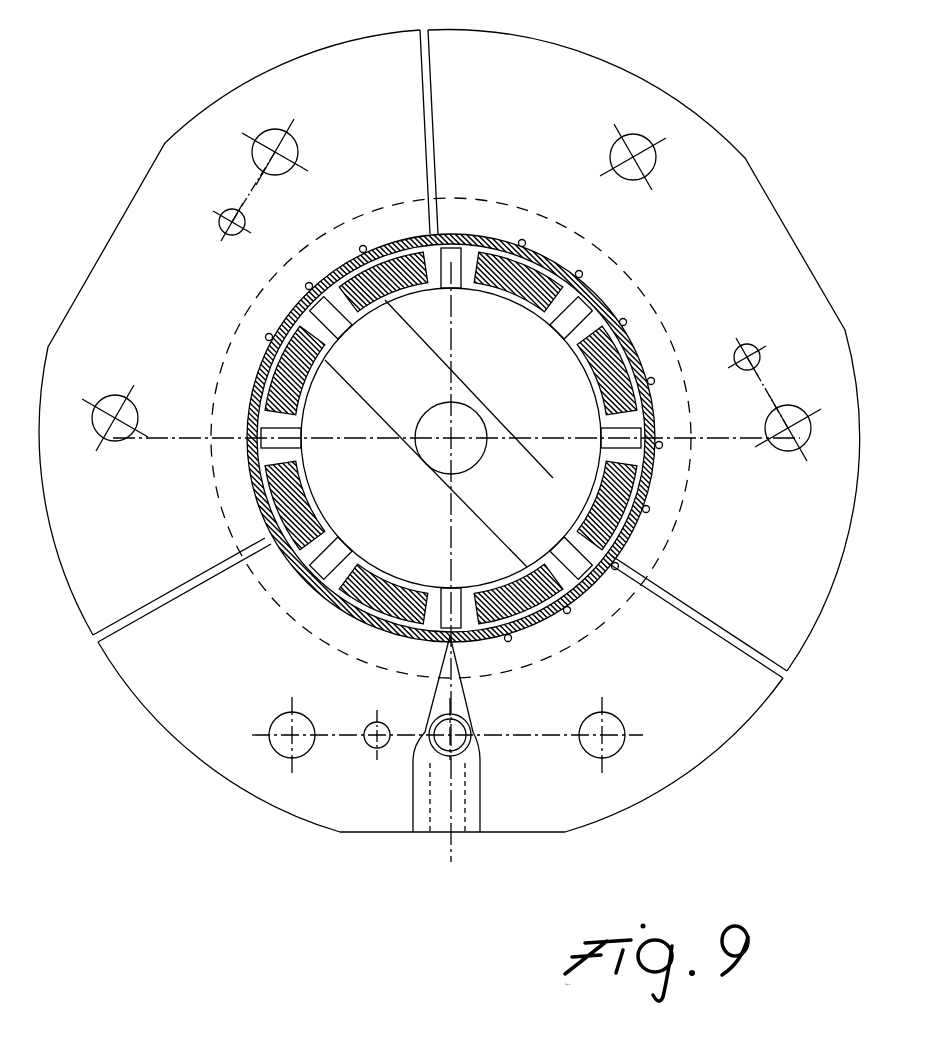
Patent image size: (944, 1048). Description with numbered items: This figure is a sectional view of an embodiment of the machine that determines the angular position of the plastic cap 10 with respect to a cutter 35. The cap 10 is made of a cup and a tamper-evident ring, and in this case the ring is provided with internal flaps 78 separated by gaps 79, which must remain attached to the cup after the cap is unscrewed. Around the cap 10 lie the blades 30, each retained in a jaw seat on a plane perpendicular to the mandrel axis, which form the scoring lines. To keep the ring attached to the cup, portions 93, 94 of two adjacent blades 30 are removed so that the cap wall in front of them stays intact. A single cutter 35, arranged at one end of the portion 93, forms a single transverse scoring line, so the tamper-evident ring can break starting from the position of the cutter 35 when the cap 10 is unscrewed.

The plastic cap 10 is at (497, 234).
The blade 30 is at (158, 207).
The cutter 35 is at (457, 817).
The internal flap 78 is at (593, 500).
The gap 79 is at (590, 325).
The portion of blade 93 is at (383, 583).
The portion of blade 94 is at (312, 407).